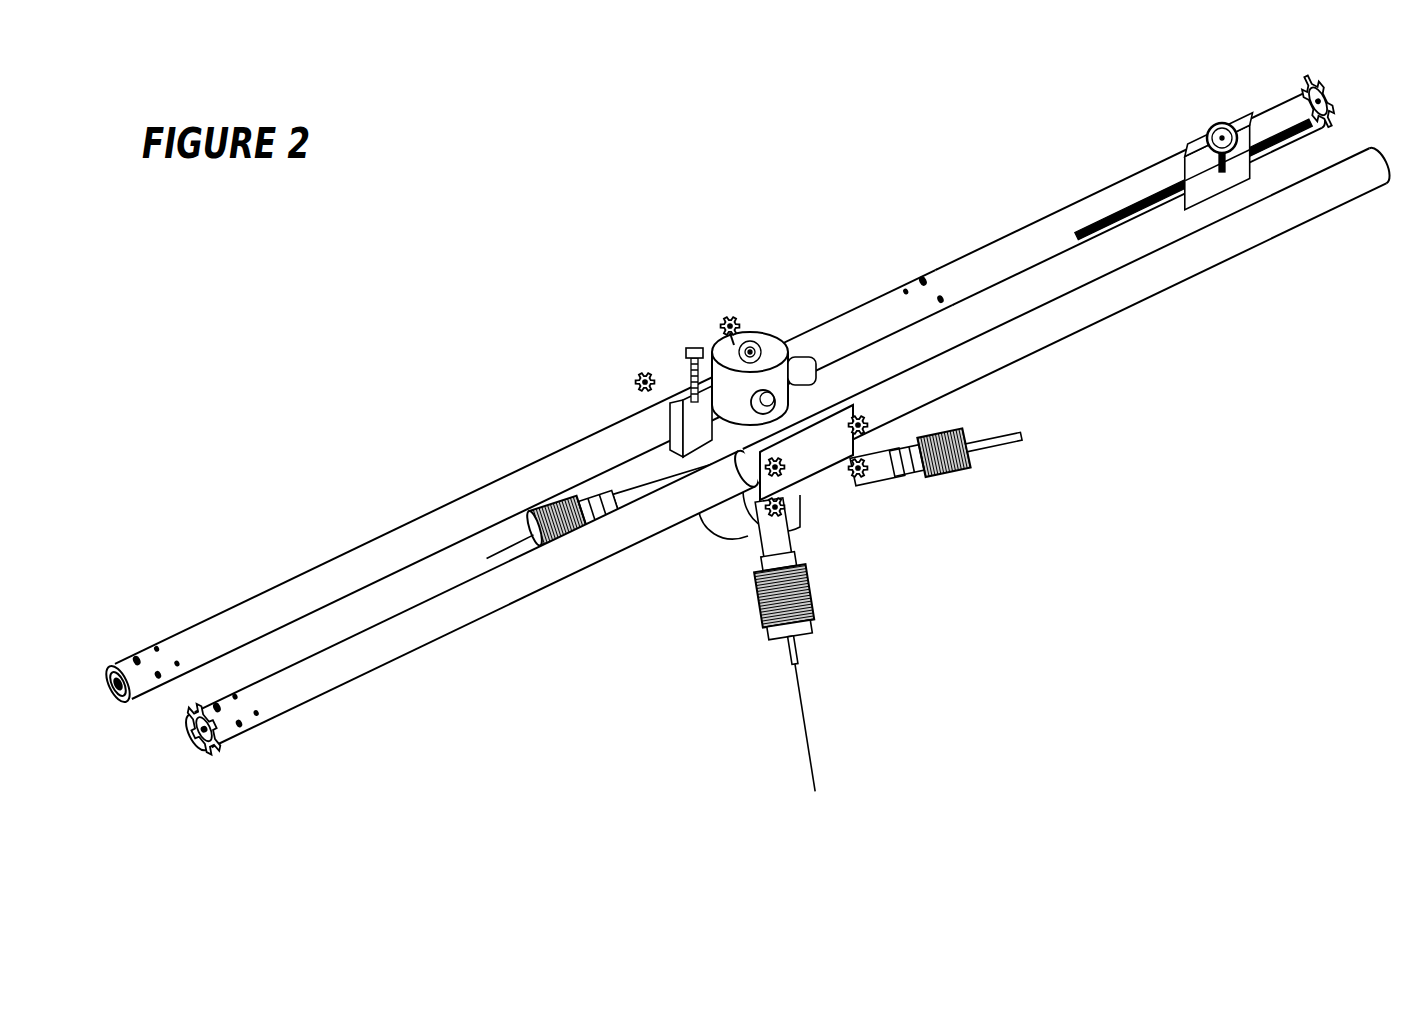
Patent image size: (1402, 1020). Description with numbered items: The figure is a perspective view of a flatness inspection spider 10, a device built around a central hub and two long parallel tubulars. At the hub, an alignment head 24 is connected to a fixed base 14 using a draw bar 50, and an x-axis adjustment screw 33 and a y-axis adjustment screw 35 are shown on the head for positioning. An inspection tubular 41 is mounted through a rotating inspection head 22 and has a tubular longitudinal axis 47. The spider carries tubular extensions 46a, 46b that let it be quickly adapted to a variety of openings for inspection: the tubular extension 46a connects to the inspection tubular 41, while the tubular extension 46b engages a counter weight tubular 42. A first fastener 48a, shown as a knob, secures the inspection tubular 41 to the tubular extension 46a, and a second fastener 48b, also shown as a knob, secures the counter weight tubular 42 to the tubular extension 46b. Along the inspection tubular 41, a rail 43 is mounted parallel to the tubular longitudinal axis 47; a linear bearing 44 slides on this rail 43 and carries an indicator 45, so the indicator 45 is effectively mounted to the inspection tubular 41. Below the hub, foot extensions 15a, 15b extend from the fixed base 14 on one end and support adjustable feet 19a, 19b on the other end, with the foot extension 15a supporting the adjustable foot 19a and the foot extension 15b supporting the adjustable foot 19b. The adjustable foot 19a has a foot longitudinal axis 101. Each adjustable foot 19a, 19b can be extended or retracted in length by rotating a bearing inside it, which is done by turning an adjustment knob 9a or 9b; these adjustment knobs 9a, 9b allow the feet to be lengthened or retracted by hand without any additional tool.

The flatness inspection spider 10 is at (648, 220).
The adjustment knob 9a is at (760, 620).
The adjustment knob 9b is at (942, 478).
The fixed base 14 is at (722, 518).
The foot extension 15a is at (760, 540).
The foot extension 15b is at (880, 470).
The adjustable foot 19a is at (815, 572).
The adjustable foot 19b is at (903, 500).
The rotating inspection head 22 is at (808, 398).
The alignment head 24 is at (771, 343).
The x-axis adjustment screw 33 is at (736, 322).
The y-axis adjustment screw 35 is at (688, 350).
The inspection tubular 41 is at (1028, 232).
The counter weight tubular 42 is at (410, 647).
The rail 43 is at (1134, 205).
The linear bearing 44 is at (1204, 175).
The indicator 45 is at (1223, 122).
The tubular extension 46a is at (379, 545).
The tubular extension 46b is at (1111, 300).
The tubular longitudinal axis 47 is at (120, 694).
The first fastener 48a is at (1325, 100).
The second fastener 48b is at (165, 758).
The draw bar 50 is at (753, 343).
The foot longitudinal axis 101 is at (796, 740).